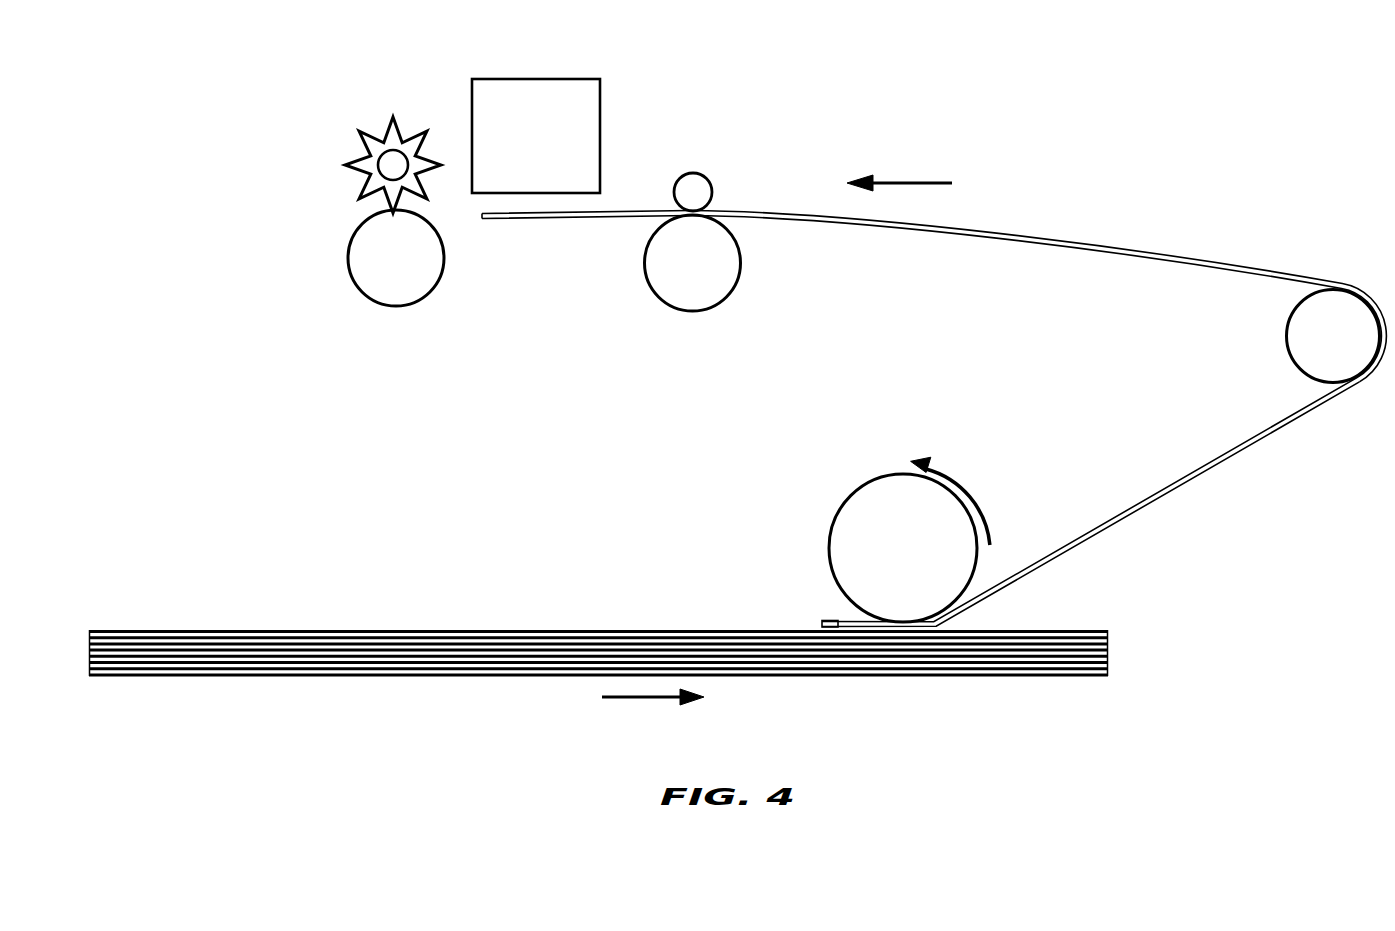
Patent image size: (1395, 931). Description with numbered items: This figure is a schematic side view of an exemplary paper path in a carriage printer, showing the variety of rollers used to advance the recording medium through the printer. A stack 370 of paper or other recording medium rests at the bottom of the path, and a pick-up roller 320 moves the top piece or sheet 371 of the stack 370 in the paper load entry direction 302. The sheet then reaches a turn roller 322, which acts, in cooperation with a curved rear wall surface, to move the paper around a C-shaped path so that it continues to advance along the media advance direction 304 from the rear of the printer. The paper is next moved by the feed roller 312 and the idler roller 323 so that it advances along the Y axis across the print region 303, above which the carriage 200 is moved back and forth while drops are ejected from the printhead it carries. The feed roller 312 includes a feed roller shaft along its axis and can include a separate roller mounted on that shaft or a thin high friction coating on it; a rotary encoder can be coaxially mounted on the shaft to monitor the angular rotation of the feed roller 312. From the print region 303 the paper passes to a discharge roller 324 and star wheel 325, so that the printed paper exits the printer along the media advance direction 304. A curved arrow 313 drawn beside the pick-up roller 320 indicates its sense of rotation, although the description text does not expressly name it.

The carriage 200 is at (533, 79).
The star wheel 325 is at (385, 132).
The discharge roller 324 is at (347, 267).
The idler roller 323 is at (697, 173).
The feed roller 312 is at (740, 268).
The print region 303 is at (608, 201).
The sheet 371 is at (1153, 507).
The turn roller 322 is at (1287, 345).
The pick-up roller 320 is at (843, 503).
The rotation direction arrow 313 is at (967, 483).
The media advance direction 304 is at (907, 182).
The paper load entry direction 302 is at (643, 699).
The stack 370 is at (1122, 653).